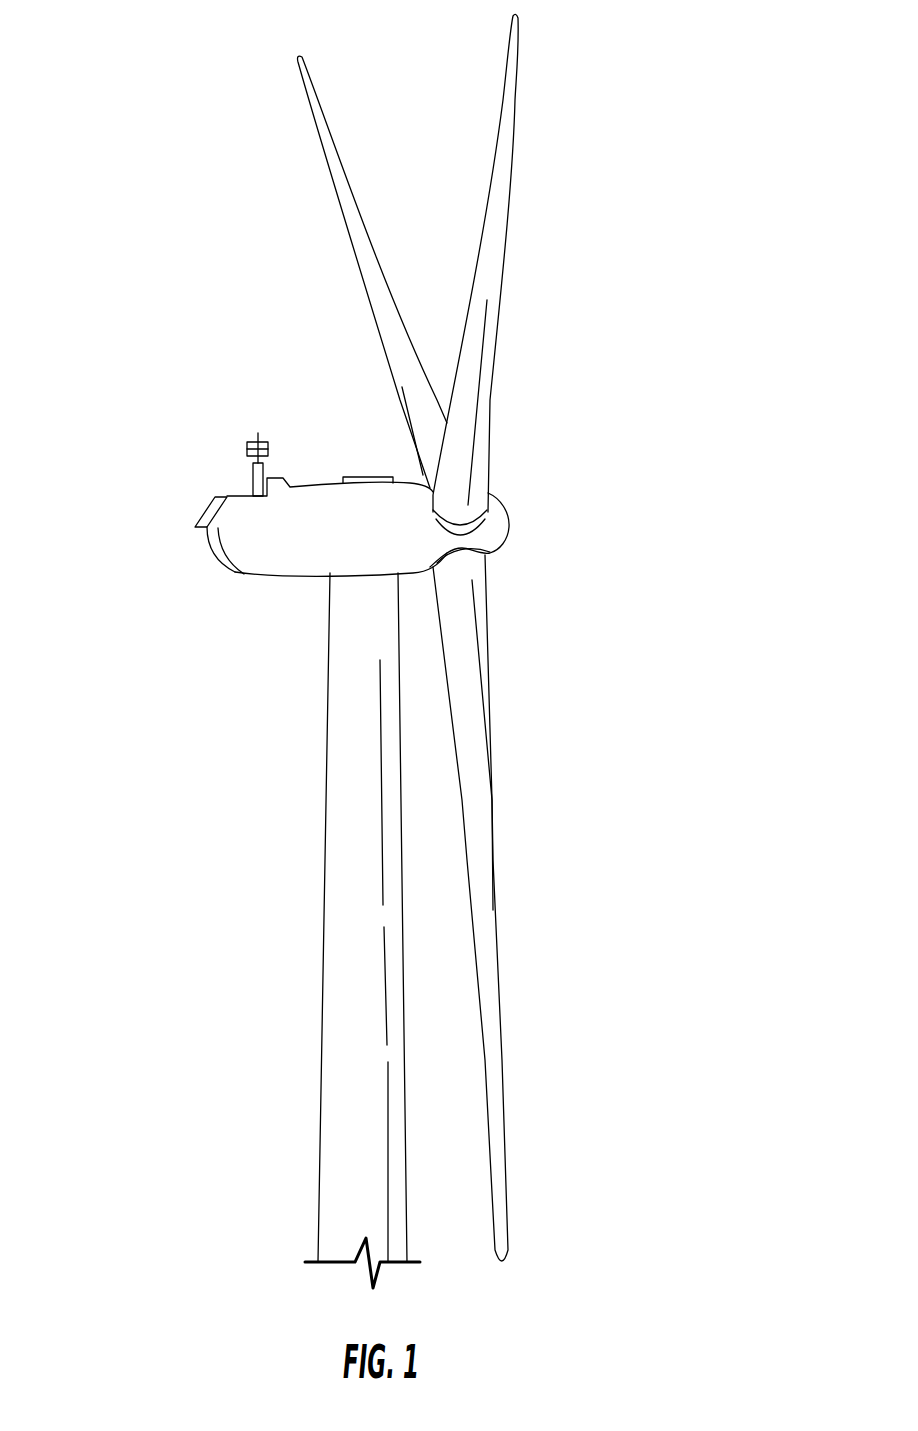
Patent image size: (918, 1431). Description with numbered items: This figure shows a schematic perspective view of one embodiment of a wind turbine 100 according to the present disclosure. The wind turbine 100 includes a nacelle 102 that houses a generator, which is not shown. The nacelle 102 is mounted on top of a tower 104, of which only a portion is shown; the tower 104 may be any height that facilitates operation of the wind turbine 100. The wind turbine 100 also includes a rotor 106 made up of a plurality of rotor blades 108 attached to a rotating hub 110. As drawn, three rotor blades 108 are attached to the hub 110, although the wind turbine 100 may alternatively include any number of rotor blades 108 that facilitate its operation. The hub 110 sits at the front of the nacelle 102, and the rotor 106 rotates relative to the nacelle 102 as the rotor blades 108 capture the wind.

The wind turbine 100 is at (155, 180).
The nacelle 102 is at (274, 592).
The tower 104 is at (328, 1035).
The rotor 106 is at (552, 349).
The rotor blades 108 is at (375, 235).
The hub 110 is at (505, 535).